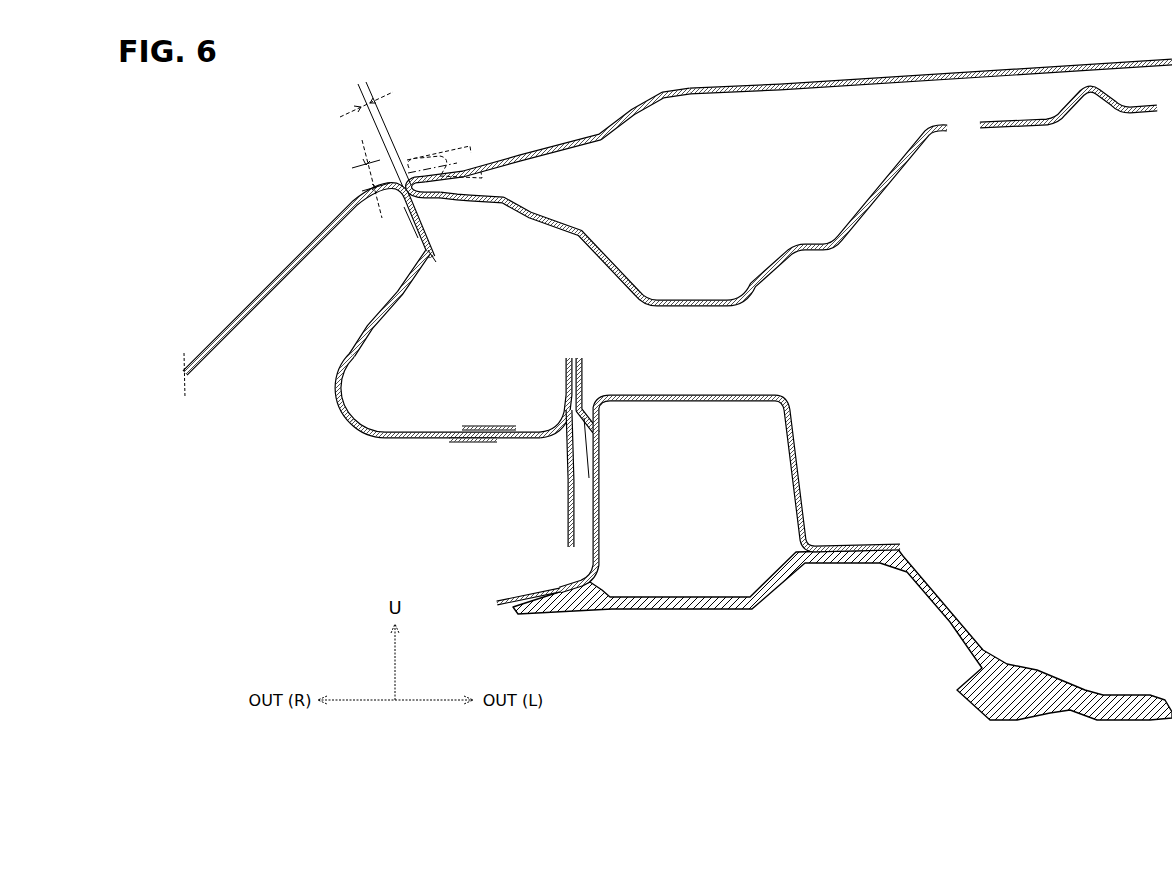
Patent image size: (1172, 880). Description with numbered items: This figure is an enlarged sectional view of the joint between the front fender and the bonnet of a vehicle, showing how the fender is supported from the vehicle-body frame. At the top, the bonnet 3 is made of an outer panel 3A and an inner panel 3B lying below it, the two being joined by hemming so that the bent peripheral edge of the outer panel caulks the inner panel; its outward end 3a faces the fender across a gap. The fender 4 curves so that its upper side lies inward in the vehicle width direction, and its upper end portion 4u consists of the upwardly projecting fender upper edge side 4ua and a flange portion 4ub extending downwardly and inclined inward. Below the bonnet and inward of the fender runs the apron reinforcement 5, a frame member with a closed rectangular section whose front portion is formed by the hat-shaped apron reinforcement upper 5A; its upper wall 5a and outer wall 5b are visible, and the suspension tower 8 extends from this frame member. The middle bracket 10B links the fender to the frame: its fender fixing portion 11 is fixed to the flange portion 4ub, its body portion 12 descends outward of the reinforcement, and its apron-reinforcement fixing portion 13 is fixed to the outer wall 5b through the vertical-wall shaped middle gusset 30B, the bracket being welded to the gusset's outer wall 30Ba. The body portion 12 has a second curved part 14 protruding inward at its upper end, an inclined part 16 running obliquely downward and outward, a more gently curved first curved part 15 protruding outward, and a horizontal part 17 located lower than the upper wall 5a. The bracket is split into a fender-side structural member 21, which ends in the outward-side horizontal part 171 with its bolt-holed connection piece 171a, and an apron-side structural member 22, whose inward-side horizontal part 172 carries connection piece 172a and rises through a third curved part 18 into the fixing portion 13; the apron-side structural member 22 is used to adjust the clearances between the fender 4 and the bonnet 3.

The bonnet 3 is at (789, 169).
The outer panel 3A is at (795, 84).
The inner panel 3B is at (880, 190).
The outward end of the bonnet 3a is at (413, 192).
The fender 4 is at (332, 231).
The fender upper end portion 4u is at (378, 161).
The fender upper edge side 4ua is at (413, 197).
The flange portion 4ub is at (410, 215).
The apron reinforcement 5 is at (698, 480).
The upper wall 5a is at (722, 392).
The outer wall 5b is at (598, 470).
The apron reinforcement upper 5A is at (801, 483).
The suspension tower 8 is at (1050, 670).
The middle bracket 10B is at (414, 359).
The fender fixing portion 11 is at (378, 300).
The body portion 12 is at (334, 412).
The apron-reinforcement fixing portion 13 is at (565, 389).
The second curved part 14 is at (434, 254).
The first curved part 15 is at (351, 421).
The inclined part 16 is at (400, 292).
The horizontal part 17 is at (487, 479).
The outward-side horizontal part 171 is at (470, 452).
The connection piece 171a is at (500, 428).
The inward-side horizontal part 172 is at (499, 476).
The connection piece 172a is at (500, 443).
The third curved part 18 is at (547, 431).
The fender-side structural member 21 is at (327, 384).
The apron-side structural member 22 is at (564, 357).
The middle gusset 30B is at (519, 502).
The outer wall of the middle gusset 30Ba is at (567, 509).